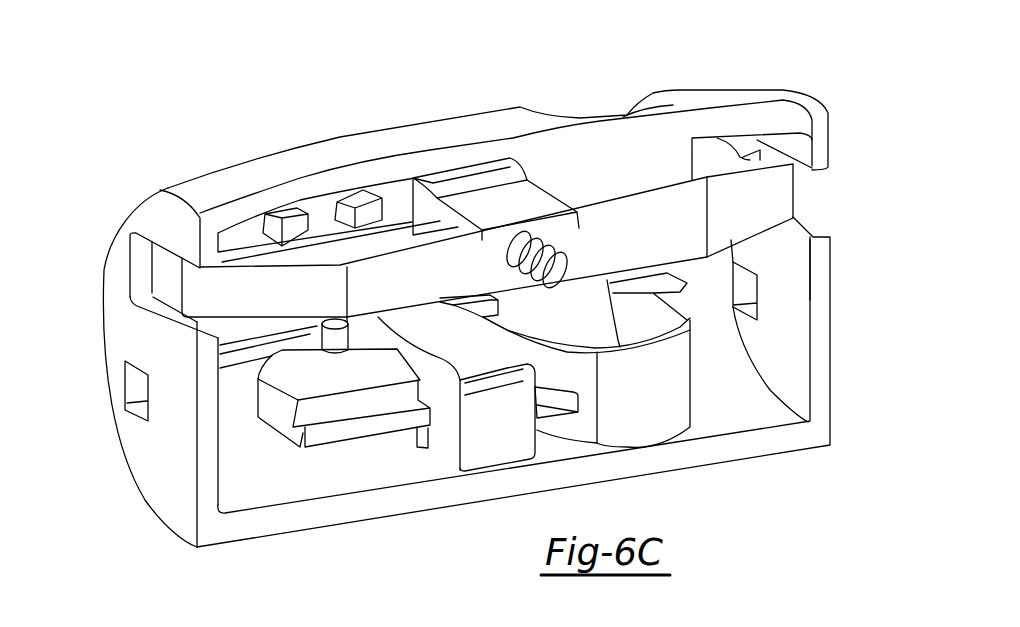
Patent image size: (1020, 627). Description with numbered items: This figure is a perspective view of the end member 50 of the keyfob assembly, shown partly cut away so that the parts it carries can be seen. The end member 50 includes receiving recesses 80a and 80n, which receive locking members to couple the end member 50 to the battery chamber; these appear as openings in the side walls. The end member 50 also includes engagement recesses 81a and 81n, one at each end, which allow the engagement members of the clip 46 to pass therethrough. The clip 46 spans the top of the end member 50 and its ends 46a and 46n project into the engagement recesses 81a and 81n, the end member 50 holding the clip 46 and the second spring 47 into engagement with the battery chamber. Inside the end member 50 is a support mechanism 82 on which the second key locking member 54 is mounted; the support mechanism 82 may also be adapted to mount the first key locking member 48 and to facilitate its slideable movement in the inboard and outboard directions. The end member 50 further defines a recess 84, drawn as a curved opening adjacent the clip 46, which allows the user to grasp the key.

The end member 50 is at (487, 75).
The clip 46 is at (543, 192).
The clip end 46a is at (753, 160).
The clip end 46n is at (160, 265).
The second spring 47 is at (570, 263).
The first key locking member 48 is at (303, 388).
The second key locking member 54 is at (483, 430).
The receiving recess 80a is at (137, 393).
The receiving recess 80n is at (748, 288).
The engagement recess 81a is at (138, 269).
The engagement recess 81n is at (799, 189).
The support mechanism 82 is at (557, 412).
The recess 84 is at (547, 316).